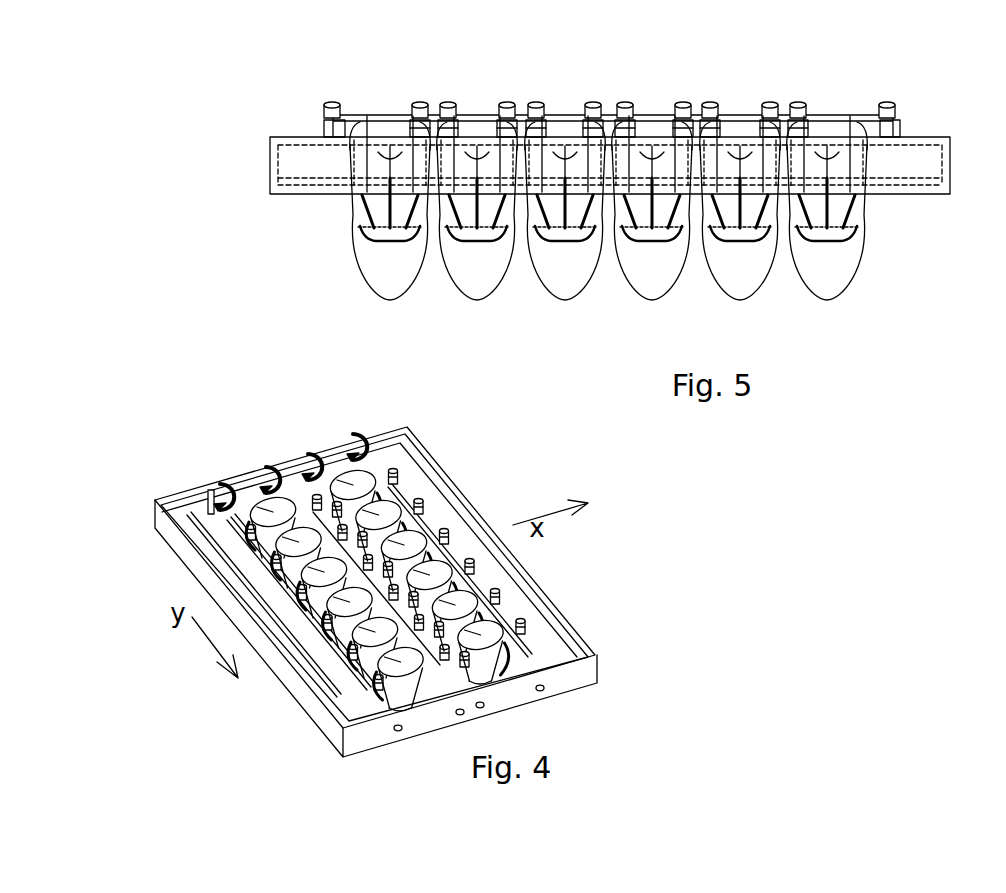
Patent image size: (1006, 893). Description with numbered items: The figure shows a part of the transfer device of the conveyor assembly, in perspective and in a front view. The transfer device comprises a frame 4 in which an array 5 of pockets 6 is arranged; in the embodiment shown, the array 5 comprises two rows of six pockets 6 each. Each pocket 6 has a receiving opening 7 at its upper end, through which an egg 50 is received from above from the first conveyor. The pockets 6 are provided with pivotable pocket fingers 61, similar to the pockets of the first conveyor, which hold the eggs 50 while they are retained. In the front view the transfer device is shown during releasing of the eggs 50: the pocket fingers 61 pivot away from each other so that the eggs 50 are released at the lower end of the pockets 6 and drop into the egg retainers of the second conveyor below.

In FIG. 5, the frame 4 is at (935, 170).
In FIG. 4, the frame 4 is at (435, 458).
In FIG. 4, the array 5 is at (273, 467).
In FIG. 5, the pocket 6 is at (489, 160).
In FIG. 4, the pocket 6 is at (413, 510).
In FIG. 5, the receiving opening 7 is at (394, 132).
In FIG. 5, the egg 50 is at (383, 280).
In FIG. 4, the egg 50 is at (296, 540).
In FIG. 5, the pocket finger 61 is at (377, 204).